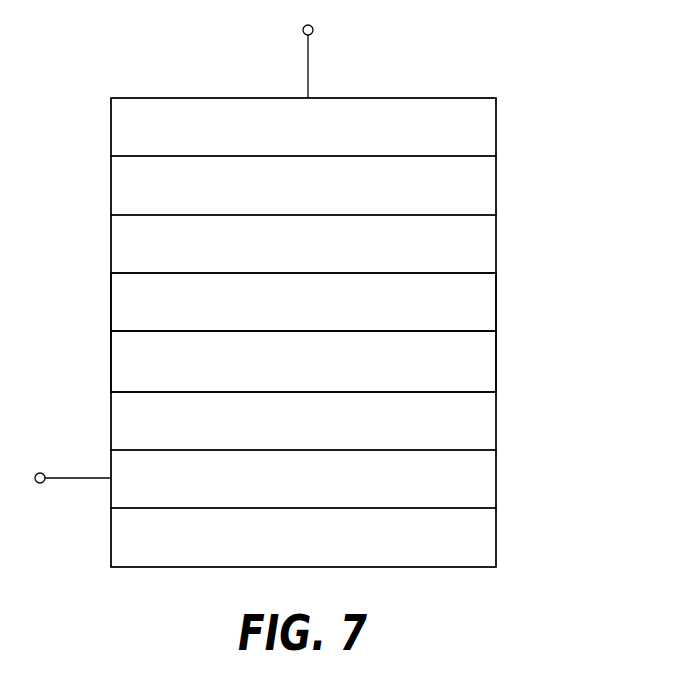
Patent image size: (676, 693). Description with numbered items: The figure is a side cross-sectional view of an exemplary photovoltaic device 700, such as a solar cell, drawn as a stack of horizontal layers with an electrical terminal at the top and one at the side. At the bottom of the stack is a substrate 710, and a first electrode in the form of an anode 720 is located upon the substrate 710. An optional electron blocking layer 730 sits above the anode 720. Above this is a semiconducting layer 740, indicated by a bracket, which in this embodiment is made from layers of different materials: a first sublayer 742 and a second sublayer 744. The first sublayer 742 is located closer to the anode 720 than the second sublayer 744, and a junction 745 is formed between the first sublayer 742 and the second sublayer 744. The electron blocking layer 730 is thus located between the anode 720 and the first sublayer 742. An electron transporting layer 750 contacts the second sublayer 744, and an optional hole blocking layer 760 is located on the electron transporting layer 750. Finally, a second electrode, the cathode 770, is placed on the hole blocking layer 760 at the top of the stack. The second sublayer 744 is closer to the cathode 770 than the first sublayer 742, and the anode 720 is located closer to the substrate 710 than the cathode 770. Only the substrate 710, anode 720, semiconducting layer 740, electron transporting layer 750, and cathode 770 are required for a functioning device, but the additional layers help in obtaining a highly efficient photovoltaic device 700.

The photovoltaic device 700 is at (500, 66).
The substrate 710 is at (496, 539).
The anode 720 is at (496, 481).
The electron blocking layer 730 is at (496, 423).
The semiconducting layer 740 is at (88, 277).
The first sublayer 742 is at (496, 373).
The second sublayer 744 is at (496, 292).
The junction 745 is at (496, 333).
The electron transporting layer 750 is at (496, 239).
The hole blocking layer 760 is at (496, 186).
The cathode 770 is at (496, 127).